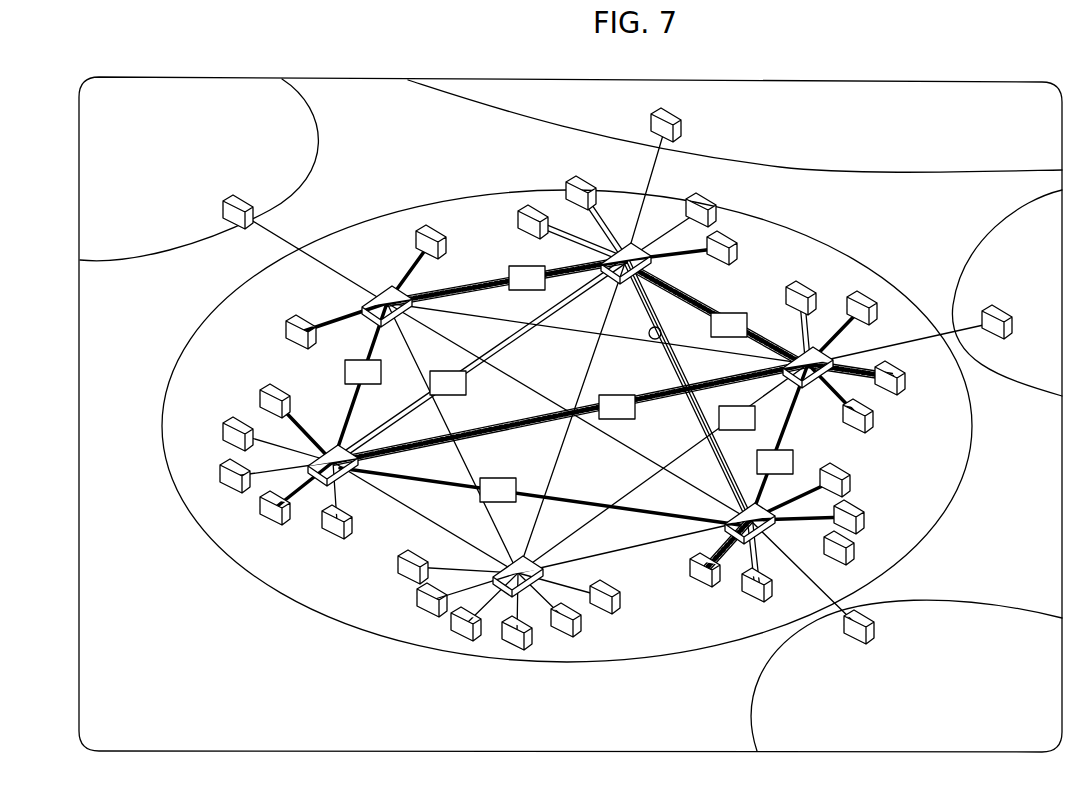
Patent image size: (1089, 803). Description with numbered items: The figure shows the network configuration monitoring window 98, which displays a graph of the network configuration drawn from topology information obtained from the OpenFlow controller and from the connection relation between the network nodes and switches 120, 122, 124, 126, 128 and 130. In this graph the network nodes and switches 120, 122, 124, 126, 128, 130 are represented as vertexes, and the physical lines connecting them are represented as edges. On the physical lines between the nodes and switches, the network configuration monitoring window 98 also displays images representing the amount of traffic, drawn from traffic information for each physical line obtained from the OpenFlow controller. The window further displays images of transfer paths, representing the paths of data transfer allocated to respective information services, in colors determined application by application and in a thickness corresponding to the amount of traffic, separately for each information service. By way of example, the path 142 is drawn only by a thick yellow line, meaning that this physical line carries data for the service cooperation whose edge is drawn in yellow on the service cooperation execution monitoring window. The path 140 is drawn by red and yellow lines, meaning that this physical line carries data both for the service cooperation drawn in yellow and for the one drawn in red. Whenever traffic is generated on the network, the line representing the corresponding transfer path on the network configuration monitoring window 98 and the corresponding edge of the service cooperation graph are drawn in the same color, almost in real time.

The network configuration monitoring window 98 is at (835, 80).
The network node or switch 120 is at (622, 244).
The network node or switch 122 is at (380, 288).
The network node or switch 124 is at (308, 468).
The network node or switch 126 is at (521, 586).
The network node or switch 128 is at (822, 356).
The network node or switch 130 is at (762, 540).
The path 140 is at (661, 331).
The path 142 is at (497, 430).